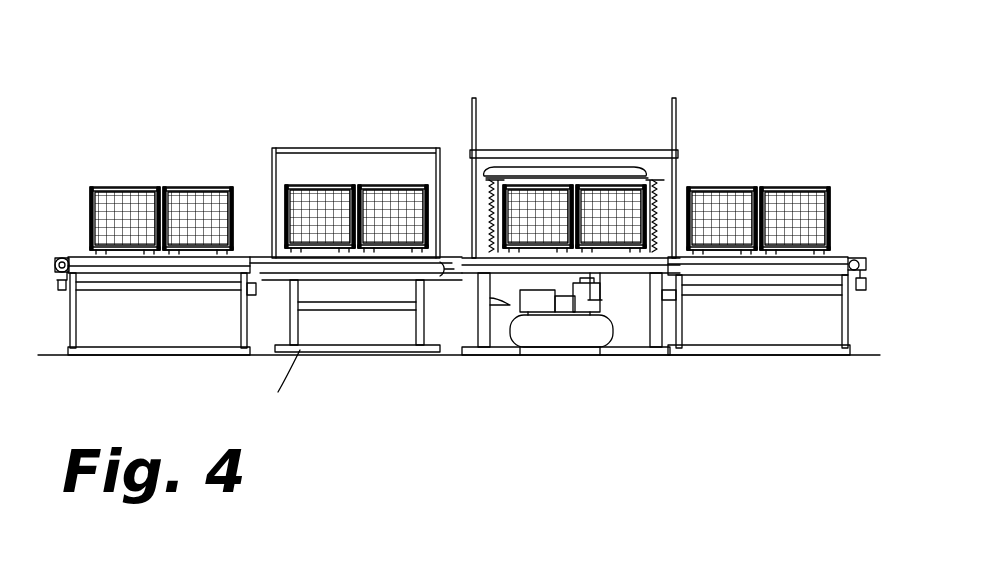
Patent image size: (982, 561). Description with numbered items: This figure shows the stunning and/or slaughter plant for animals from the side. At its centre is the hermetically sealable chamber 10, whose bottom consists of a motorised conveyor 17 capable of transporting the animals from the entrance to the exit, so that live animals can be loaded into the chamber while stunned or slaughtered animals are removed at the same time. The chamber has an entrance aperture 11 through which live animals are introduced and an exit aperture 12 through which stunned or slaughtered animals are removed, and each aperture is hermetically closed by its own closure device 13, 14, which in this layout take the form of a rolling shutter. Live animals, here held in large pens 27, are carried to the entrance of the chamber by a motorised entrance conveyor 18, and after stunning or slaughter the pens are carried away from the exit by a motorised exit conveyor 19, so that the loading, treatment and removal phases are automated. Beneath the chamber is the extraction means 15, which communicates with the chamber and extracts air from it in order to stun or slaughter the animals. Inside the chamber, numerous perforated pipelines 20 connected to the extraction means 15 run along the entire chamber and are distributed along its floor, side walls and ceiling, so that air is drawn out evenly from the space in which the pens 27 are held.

The hermetically sealable chamber 10 is at (598, 170).
The entrance aperture 11 is at (713, 200).
The exit aperture 12 is at (458, 215).
The closure device 13 is at (675, 100).
The closure device 14 is at (478, 115).
The extraction means 15 is at (612, 325).
The motorised conveyor 17 is at (500, 270).
The motorised entrance conveyor 18 is at (786, 275).
The motorised exit conveyor 19 is at (333, 272).
The perforated pipelines 20 is at (540, 187).
The large pen 27 is at (785, 187).